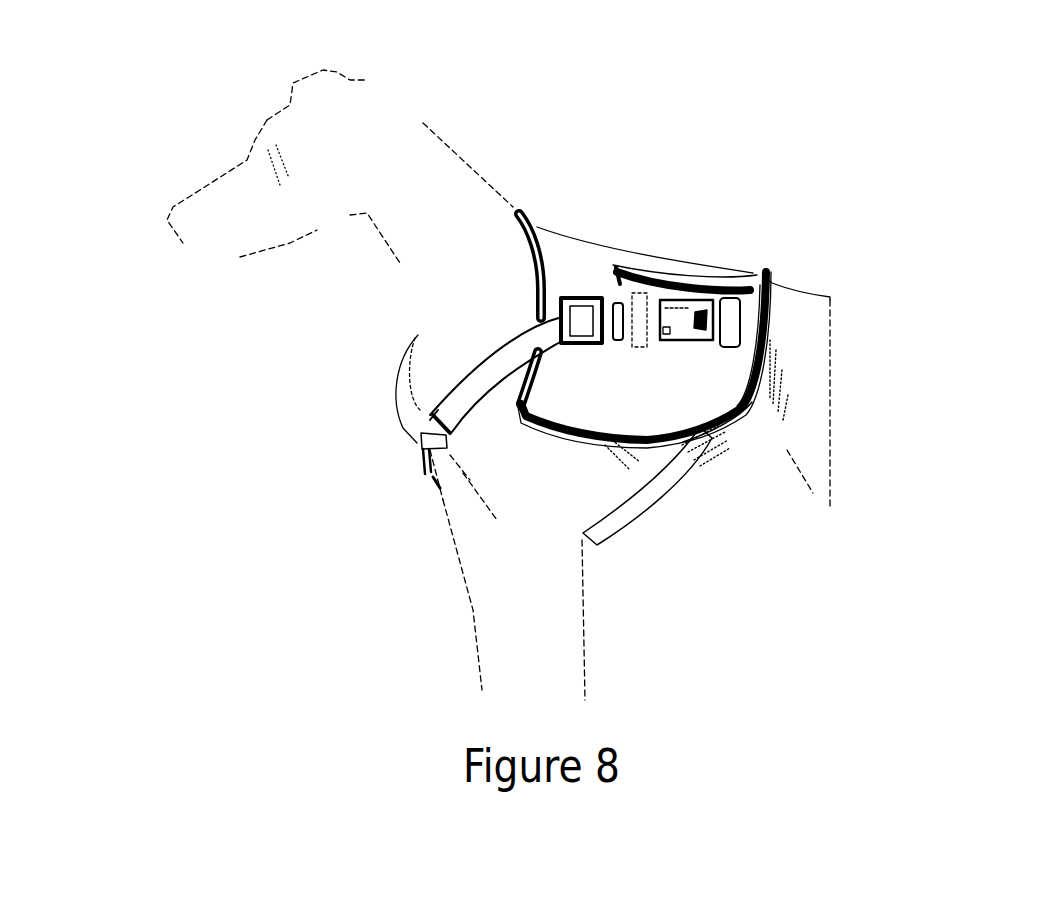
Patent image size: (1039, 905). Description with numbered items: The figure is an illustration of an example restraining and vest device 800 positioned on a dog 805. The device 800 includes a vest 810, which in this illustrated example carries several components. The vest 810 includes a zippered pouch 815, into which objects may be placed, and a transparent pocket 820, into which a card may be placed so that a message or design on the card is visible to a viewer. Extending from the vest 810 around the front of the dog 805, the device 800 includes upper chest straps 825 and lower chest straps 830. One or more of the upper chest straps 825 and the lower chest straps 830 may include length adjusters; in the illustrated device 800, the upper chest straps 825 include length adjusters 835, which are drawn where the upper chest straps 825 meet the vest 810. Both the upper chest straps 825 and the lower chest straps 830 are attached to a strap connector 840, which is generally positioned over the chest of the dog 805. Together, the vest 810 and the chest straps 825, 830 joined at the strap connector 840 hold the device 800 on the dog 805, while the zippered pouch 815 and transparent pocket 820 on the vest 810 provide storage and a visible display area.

The restraining and vest device 800 is at (691, 78).
The dog 805 is at (807, 343).
The vest 810 is at (722, 395).
The zippered pouch 815 is at (711, 285).
The transparent pocket 820 is at (687, 332).
The upper chest straps 825 is at (475, 378).
The lower chest straps 830 is at (432, 483).
The length adjusters 835 is at (594, 297).
The strap connector 840 is at (423, 437).